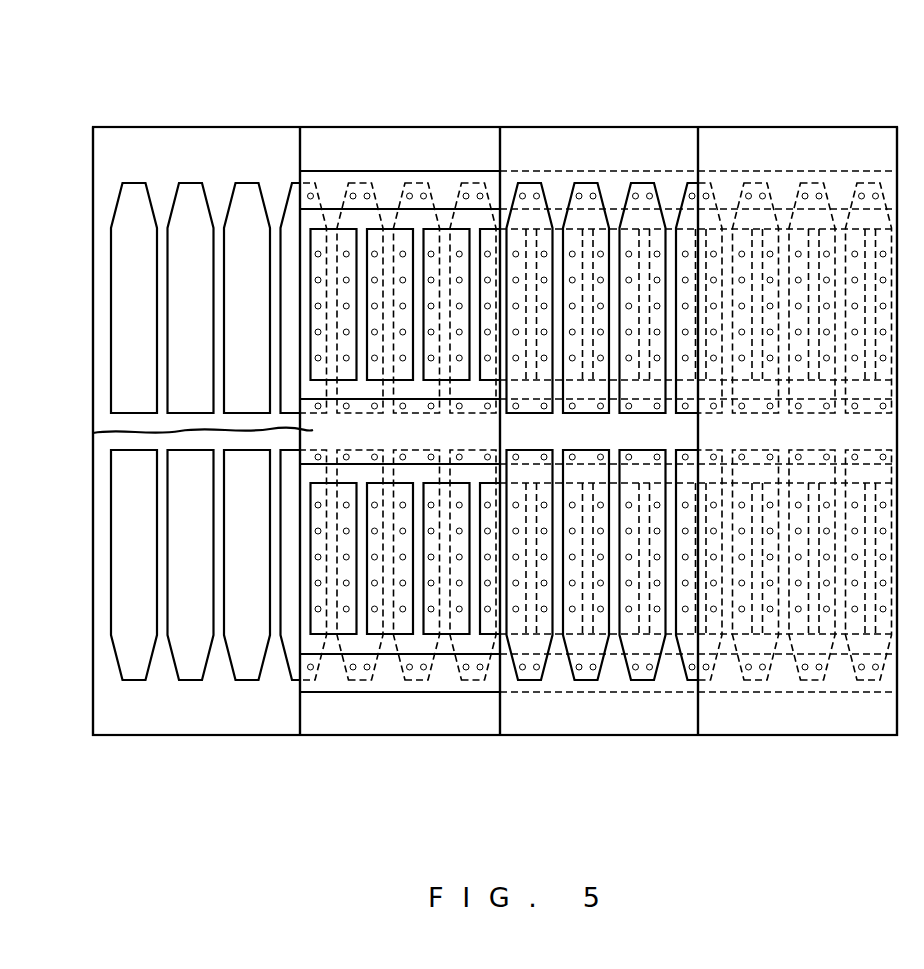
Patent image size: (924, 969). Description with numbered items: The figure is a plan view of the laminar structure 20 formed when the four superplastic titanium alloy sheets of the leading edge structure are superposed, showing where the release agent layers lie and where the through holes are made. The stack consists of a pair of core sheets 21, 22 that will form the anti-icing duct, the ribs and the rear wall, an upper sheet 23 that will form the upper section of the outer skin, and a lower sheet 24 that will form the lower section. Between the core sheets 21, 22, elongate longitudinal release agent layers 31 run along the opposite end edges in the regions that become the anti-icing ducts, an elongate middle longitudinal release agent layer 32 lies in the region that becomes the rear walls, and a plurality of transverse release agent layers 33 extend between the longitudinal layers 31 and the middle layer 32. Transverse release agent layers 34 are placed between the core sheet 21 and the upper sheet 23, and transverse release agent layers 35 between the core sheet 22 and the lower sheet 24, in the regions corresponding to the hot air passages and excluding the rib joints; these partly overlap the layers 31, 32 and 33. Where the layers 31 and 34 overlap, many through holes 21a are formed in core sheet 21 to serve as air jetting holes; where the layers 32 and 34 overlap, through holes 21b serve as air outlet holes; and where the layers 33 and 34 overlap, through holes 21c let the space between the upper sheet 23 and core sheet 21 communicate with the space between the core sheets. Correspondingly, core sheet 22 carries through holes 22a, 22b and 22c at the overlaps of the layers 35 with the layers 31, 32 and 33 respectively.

The electrode structure 20 is at (822, 113).
The core sheet 21 is at (623, 726).
The through holes 21a is at (652, 188).
The through holes 21b is at (545, 412).
The through holes 21c is at (546, 250).
The core sheet 22 is at (410, 727).
The through holes 22a is at (355, 670).
The through holes 22b is at (377, 410).
The through holes 22c is at (316, 332).
The upper sheet 23 is at (820, 727).
The lower sheet 24 is at (192, 725).
The longitudinal release agent layers 31 is at (392, 184).
The middle longitudinal release agent layer 32 is at (93, 433).
The transverse release agent layers 33 is at (332, 230).
The transverse release agent layers 34 is at (527, 184).
The transverse release agent layers 35 is at (135, 193).